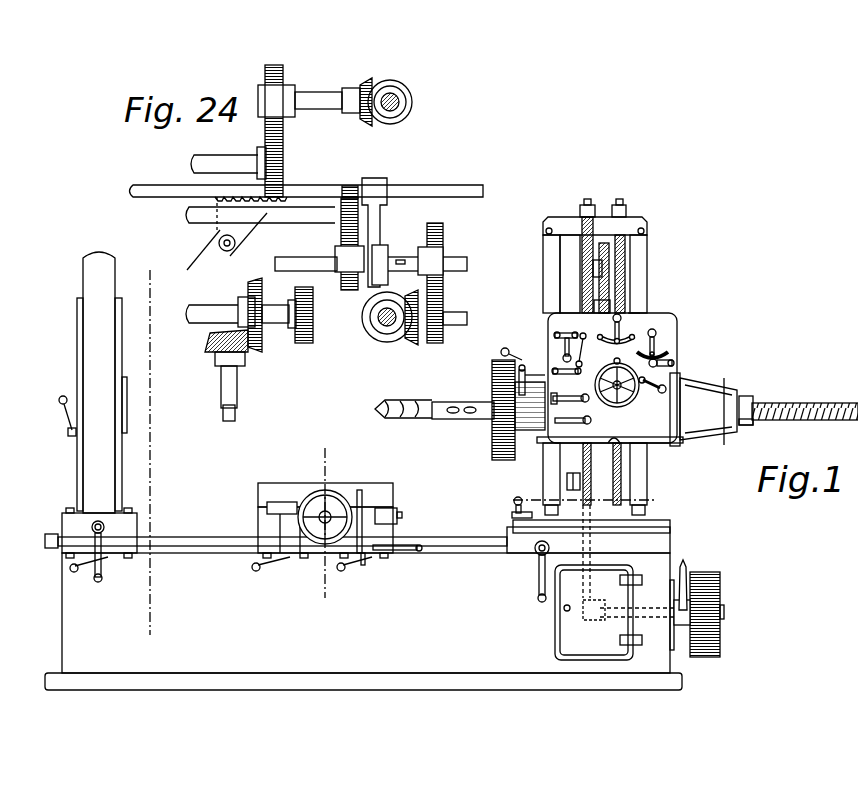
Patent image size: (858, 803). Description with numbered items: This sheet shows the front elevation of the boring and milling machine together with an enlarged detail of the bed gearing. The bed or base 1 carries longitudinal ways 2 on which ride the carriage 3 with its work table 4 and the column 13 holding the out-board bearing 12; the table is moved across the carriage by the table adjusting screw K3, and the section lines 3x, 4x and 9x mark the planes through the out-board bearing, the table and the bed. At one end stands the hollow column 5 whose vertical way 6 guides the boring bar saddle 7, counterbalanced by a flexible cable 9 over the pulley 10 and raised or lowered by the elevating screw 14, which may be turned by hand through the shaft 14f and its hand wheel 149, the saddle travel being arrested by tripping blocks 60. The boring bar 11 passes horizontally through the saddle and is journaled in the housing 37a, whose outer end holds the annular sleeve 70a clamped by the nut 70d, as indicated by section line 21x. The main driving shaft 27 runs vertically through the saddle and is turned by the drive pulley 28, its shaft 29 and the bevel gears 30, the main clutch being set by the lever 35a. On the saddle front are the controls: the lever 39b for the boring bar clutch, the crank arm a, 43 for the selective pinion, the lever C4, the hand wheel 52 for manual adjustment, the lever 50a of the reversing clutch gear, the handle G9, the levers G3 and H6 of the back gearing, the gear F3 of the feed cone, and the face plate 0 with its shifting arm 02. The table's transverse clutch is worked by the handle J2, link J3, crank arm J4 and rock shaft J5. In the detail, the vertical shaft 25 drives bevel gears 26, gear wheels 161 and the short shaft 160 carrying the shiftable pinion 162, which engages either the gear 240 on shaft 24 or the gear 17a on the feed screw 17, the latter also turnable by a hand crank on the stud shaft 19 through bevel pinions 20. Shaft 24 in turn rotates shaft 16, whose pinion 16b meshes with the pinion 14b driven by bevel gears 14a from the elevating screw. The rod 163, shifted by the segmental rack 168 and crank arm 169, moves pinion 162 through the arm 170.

In FIG. 24, the pinion 14b is at (274, 72).
In FIG. 24, the bevel gears 14a is at (366, 80).
In FIG. 24, the elevating screw 14 is at (396, 96).
In FIG. 1, the elevating screw 14 is at (628, 270).
In FIG. 24, the shaft 16 is at (216, 163).
In FIG. 24, the pinion 16b is at (287, 165).
In FIG. 24, the rod 163 is at (428, 190).
In FIG. 24, the gear 240 is at (348, 184).
In FIG. 24, the shiftable pinion 162 is at (343, 290).
In FIG. 24, the short shaft 160 is at (318, 249).
In FIG. 24, the arm 170 is at (375, 190).
In FIG. 24, the shaft 24 is at (288, 224).
In FIG. 24, the segmental rack 168 is at (225, 237).
In FIG. 24, the gear wheels 161 is at (445, 312).
In FIG. 24, the vertical shaft 25 is at (385, 330).
In FIG. 1, the vertical shaft 25 is at (622, 478).
In FIG. 24, the bevel gears 26 is at (416, 345).
In FIG. 24, the feed screw 17 is at (209, 313).
In FIG. 24, the gear 17a is at (303, 345).
In FIG. 24, the bevel pinions 20 is at (248, 336).
In FIG. 24, the stud shaft 19 is at (238, 395).
In FIG. 1, the stud shaft 19 is at (536, 556).
In FIG. 1, the bed 1 is at (363, 608).
In FIG. 1, the ways 2 is at (176, 540).
In FIG. 1, the column 13 is at (96, 276).
In FIG. 1, the out-board bearing 12 is at (127, 394).
In FIG. 1, the section line 3x is at (149, 439).
In FIG. 1, the carriage 3 is at (294, 530).
In FIG. 1, the work table 4 is at (272, 493).
In FIG. 1, the table adjusting screw K3 is at (320, 509).
In FIG. 1, the section line 4x is at (327, 523).
In FIG. 1, the crank arm J4 is at (360, 490).
In FIG. 1, the rock shaft J5 is at (397, 510).
In FIG. 1, the link J3 is at (363, 560).
In FIG. 1, the operating handle J2 is at (410, 551).
In FIG. 1, the vertical way 6 is at (551, 282).
In FIG. 1, the column 5 is at (570, 255).
In FIG. 1, the main driving shaft 27 is at (585, 268).
In FIG. 1, the pulley 10 is at (607, 258).
In FIG. 1, the flexible cable 9 is at (597, 307).
In FIG. 1, the gear F3 is at (634, 318).
In FIG. 1, the hand wheel 52 is at (513, 358).
In FIG. 1, the lever 50a is at (521, 365).
In FIG. 1, the shifting arm 02 is at (501, 352).
In FIG. 1, the face plate 0 is at (498, 380).
In FIG. 1, the boring bar 11 is at (440, 417).
In FIG. 1, the boring bar saddle 7 is at (663, 446).
In FIG. 1, the main clutch lever 35a is at (548, 434).
In FIG. 1, the shaft 14f is at (606, 392).
In FIG. 1, the hand wheel 149 is at (627, 392).
In FIG. 1, the handle G9 is at (606, 350).
In FIG. 1, the crank arm a is at (657, 334).
In FIG. 1, the crank arm 43 is at (686, 332).
In FIG. 1, the lever H6 is at (676, 363).
In FIG. 1, the lever G3 is at (574, 393).
In FIG. 1, the lever 39b is at (572, 422).
In FIG. 1, the lever C4 is at (650, 385).
In FIG. 1, the section line 21x is at (719, 409).
In FIG. 1, the bearing housing 37a is at (703, 409).
In FIG. 1, the annular sleeve 70a is at (748, 396).
In FIG. 1, the nut 70d is at (748, 425).
In FIG. 1, the tripping blocks 60 is at (580, 481).
In FIG. 1, the section line 9x is at (591, 498).
In FIG. 1, the crank arm 169 is at (512, 515).
In FIG. 1, the bevel gears 30 is at (594, 612).
In FIG. 1, the shaft 29 is at (622, 640).
In FIG. 1, the drive pulley 28 is at (721, 641).